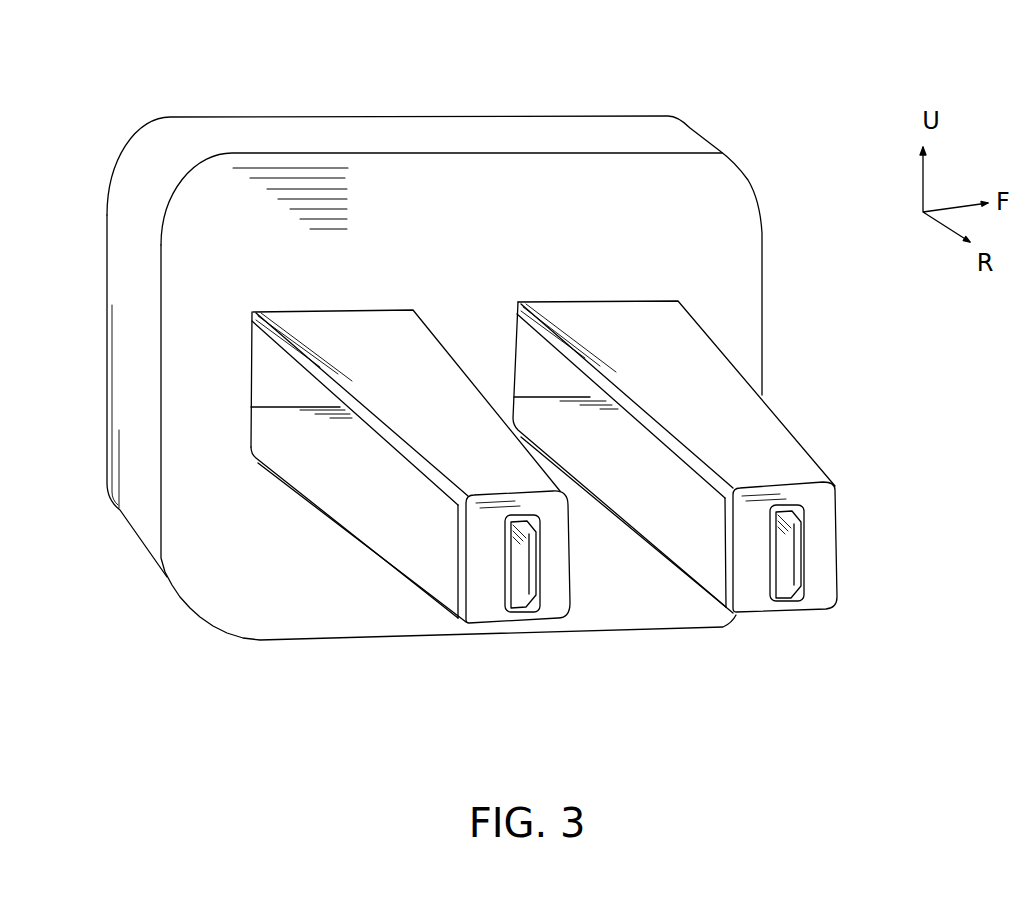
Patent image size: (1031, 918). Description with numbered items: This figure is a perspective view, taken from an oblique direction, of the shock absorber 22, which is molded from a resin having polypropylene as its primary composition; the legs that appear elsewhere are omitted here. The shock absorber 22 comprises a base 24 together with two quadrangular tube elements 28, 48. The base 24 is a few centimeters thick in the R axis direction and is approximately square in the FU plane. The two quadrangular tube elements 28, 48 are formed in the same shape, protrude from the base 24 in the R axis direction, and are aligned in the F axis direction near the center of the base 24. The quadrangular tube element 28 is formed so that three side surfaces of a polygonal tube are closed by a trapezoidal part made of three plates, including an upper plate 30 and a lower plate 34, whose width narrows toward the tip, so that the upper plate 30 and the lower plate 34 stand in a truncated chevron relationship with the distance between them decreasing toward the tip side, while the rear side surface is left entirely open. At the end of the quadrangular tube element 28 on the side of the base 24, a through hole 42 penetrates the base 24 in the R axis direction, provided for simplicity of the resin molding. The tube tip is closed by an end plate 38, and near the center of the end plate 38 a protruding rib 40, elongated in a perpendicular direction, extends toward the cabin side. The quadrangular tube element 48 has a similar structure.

The shock absorber 22 is at (447, 379).
The base 24 is at (590, 126).
The quadrangular tube element 28 is at (354, 391).
The upper plate 30 is at (363, 323).
The lower plate 34 is at (406, 550).
The end plate 38 is at (552, 603).
The protruding rib 40 is at (533, 568).
The through hole 42 is at (263, 382).
The quadrangular tube element 48 is at (658, 293).